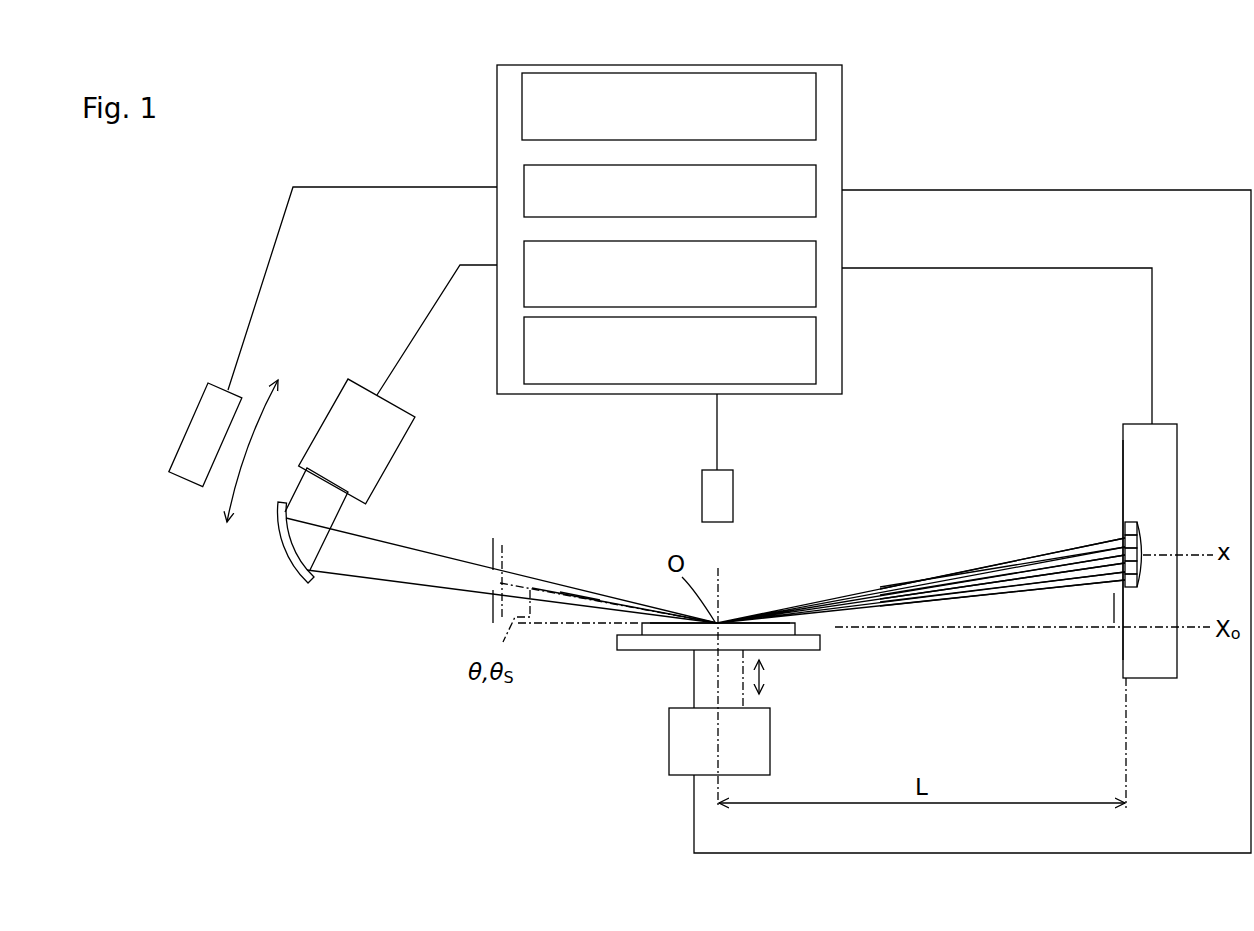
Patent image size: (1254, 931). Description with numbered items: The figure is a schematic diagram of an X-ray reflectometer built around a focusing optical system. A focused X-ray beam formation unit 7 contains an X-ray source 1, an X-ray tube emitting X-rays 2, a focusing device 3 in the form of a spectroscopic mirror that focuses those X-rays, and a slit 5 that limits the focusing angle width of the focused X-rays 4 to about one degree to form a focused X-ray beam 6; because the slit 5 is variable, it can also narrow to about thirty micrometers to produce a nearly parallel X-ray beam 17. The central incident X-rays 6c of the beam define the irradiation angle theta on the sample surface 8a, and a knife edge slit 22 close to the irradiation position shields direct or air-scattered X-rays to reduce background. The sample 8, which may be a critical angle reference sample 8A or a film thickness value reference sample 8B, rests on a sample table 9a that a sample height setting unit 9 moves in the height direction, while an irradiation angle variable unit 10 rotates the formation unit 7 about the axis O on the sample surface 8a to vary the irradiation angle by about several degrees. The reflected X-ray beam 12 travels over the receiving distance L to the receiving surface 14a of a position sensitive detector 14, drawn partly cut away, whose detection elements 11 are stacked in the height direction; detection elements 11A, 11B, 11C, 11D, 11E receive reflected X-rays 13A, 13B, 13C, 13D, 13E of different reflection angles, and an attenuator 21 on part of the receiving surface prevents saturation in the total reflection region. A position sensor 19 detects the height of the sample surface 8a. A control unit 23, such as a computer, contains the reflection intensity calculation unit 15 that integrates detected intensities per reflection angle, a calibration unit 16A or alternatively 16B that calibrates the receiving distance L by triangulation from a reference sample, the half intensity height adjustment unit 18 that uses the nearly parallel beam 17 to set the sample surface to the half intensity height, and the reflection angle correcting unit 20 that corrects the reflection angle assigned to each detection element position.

The X-ray source 1 is at (408, 434).
The X-rays 2 is at (347, 513).
The focusing device 3 is at (290, 556).
The X-rays focused by the focusing device 4 is at (398, 545).
The slit 5 is at (495, 536).
The focused X-ray beam 6 is at (548, 585).
The central incident X-rays 6c is at (563, 590).
The focused X-ray beam formation unit 7 is at (379, 395).
The sample 8 is at (806, 644).
The critical angle reference sample 8A is at (718, 629).
The film thickness value reference sample 8B is at (797, 630).
The sample surface 8a is at (782, 622).
The sample height setting unit 9 is at (776, 735).
The sample table 9a is at (820, 647).
The irradiation angle variable unit 10 is at (195, 415).
The detection elements 11 is at (1157, 533).
The detection element 11A is at (1138, 576).
The detection element 11B is at (1138, 566).
The detection element 11C is at (1138, 556).
The detection element 11D is at (1138, 546).
The detection element 11E is at (1138, 535).
The reflected X-ray beam 12 is at (924, 578).
The reflected X-ray 13A is at (1075, 577).
The reflected X-ray 13B is at (1047, 574).
The reflected X-ray 13C is at (1018, 573).
The reflected X-ray 13D is at (990, 566).
The reflected X-ray 13E is at (958, 573).
The position sensitive detector 14 is at (1177, 426).
The receiving surface 14a is at (1125, 482).
The reflection intensity calculation unit 15 is at (816, 115).
The calibration unit 16A is at (749, 177).
The calibration unit 16B is at (816, 185).
The nearly parallel X-ray beam 17 is at (1008, 586).
The half intensity height adjustment unit 18 is at (816, 270).
The position sensor 19 is at (733, 495).
The reflection angle correcting unit 20 is at (816, 345).
The attenuator 21 is at (1112, 612).
The knife edge slit 22 is at (722, 578).
The control unit 23 is at (843, 75).